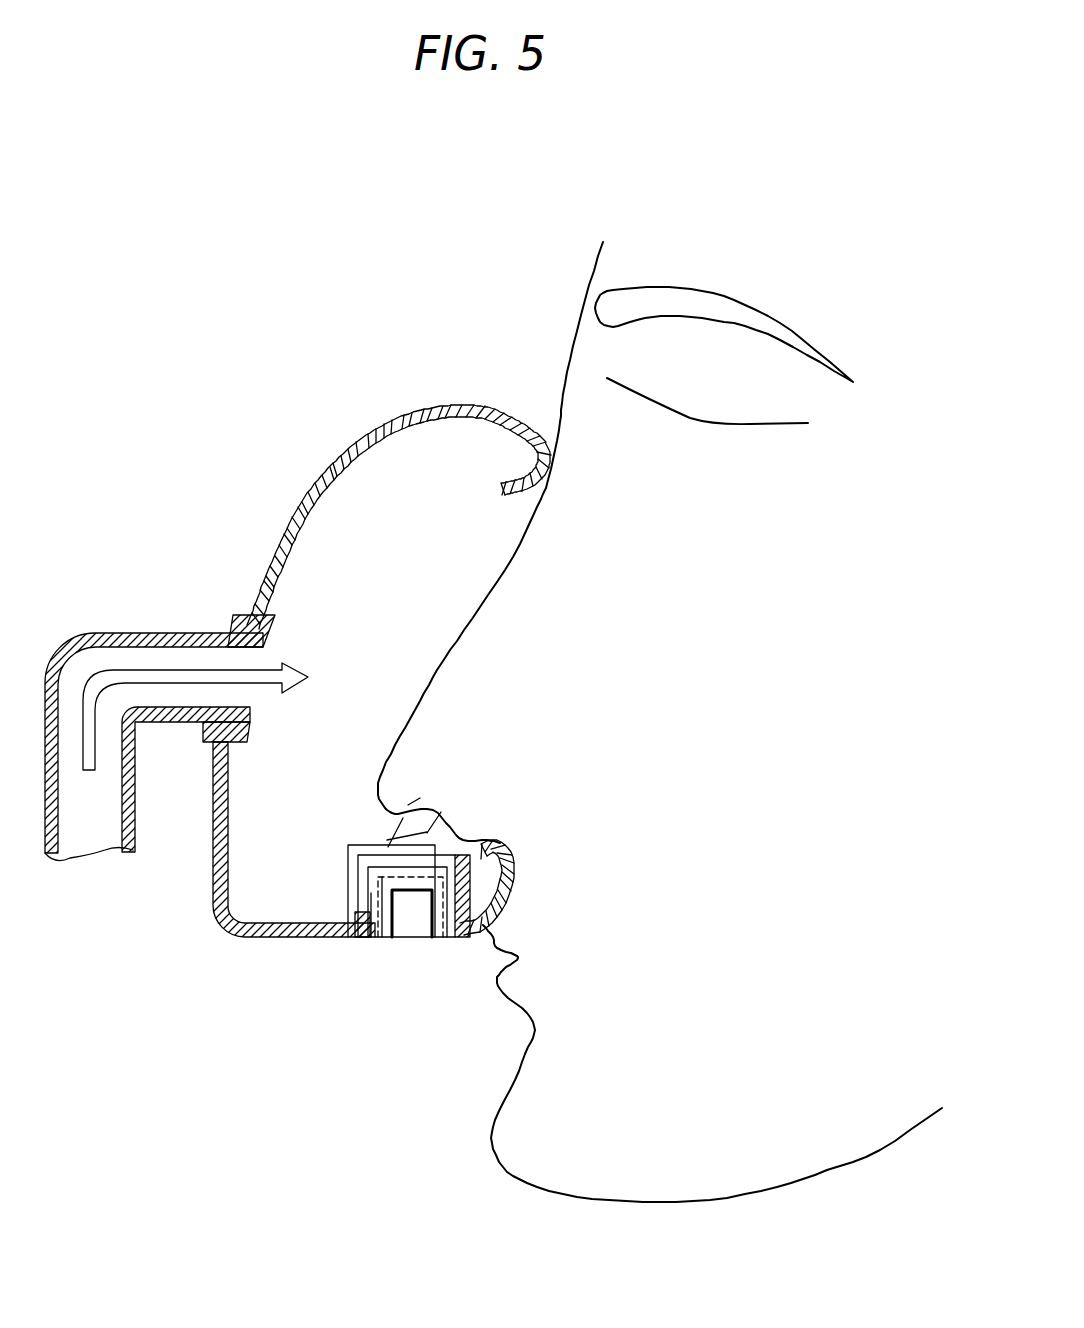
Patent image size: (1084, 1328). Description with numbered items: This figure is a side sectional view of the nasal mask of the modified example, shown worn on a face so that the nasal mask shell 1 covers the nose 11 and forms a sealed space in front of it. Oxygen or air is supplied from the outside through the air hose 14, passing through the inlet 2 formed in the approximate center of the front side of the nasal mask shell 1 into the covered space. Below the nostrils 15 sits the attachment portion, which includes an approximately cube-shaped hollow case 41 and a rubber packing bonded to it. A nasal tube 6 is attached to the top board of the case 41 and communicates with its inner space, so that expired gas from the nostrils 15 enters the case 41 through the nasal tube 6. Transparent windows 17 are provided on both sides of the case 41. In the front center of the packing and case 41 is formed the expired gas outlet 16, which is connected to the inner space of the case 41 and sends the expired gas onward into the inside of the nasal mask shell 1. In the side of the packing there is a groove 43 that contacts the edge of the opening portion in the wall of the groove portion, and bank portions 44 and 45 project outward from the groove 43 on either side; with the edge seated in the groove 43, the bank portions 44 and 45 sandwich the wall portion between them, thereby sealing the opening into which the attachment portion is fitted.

The nasal mask shell 1 is at (288, 553).
The inlet 2 is at (225, 665).
The nasal tube 6 is at (372, 842).
The nose 11 is at (437, 697).
The air hose 14 is at (135, 820).
The nostrils 15 is at (380, 813).
The expired gas outlet 16 is at (343, 903).
The windows 17 is at (412, 930).
The case 41 is at (383, 927).
The groove 43 is at (368, 853).
The bank portion 44 is at (350, 866).
The bank portion 45 is at (420, 868).